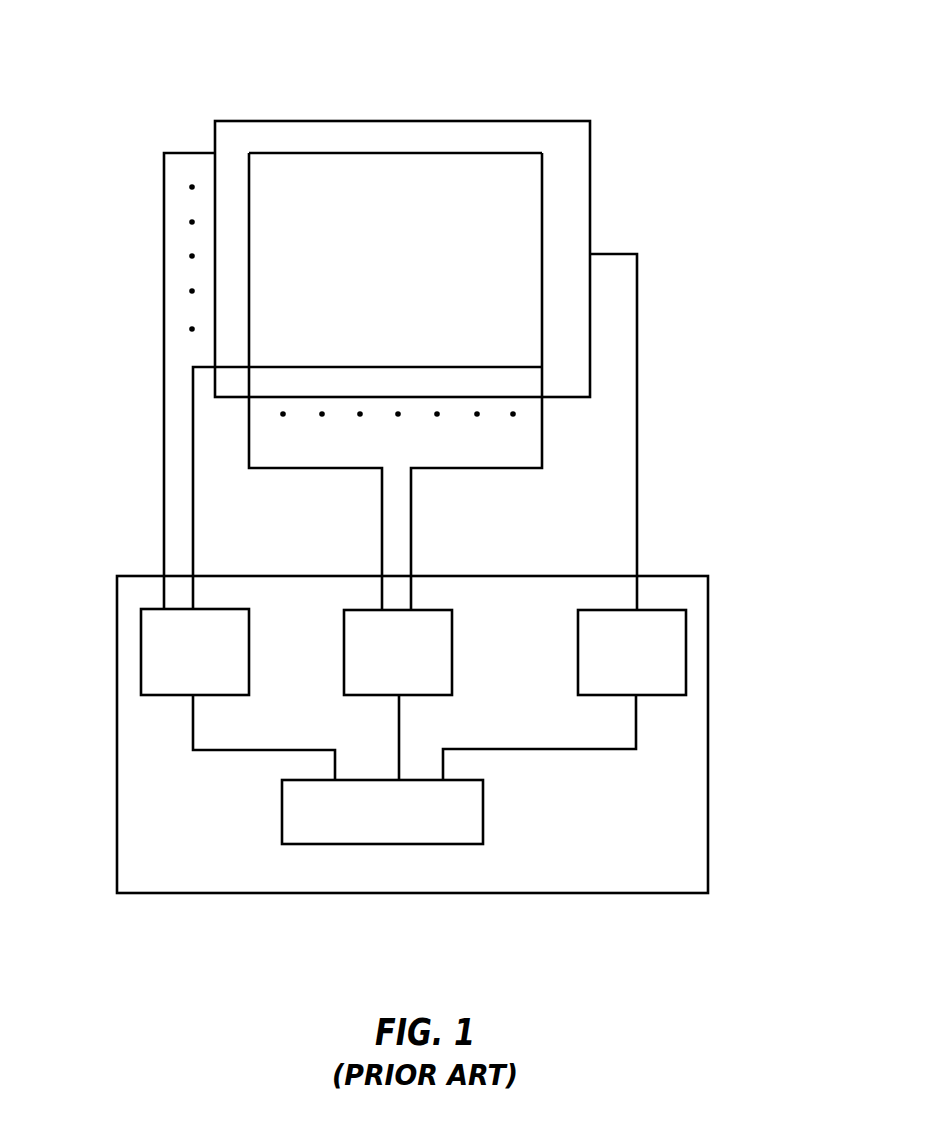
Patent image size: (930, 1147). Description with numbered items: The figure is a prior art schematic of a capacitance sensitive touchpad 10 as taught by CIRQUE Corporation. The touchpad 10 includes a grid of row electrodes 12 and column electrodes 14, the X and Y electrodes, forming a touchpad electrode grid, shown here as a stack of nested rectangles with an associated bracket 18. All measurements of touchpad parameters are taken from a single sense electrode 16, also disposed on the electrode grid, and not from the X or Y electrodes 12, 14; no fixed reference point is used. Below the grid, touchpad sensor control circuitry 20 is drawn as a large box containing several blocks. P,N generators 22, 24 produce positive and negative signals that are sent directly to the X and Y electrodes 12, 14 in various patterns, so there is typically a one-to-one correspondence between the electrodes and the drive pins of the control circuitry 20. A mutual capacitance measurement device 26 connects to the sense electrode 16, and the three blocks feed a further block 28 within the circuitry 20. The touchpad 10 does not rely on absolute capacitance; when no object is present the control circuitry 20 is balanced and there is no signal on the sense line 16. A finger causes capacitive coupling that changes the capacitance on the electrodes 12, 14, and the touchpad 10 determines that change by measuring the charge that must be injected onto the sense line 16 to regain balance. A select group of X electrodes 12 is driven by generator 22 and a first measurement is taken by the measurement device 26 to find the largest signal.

The capacitance sensitive touchpad 10 is at (566, 78).
The row electrodes 12 is at (182, 340).
The column electrodes 14 is at (549, 490).
The sense electrode 16 is at (637, 282).
The touch panel 18 is at (730, 107).
The touchpad sensor control circuitry 20 is at (707, 750).
The P,N generator 22 is at (141, 648).
The P,N generator 24 is at (452, 636).
The mutual capacitance measurement device 26 is at (578, 660).
The processing unit 28 is at (483, 810).